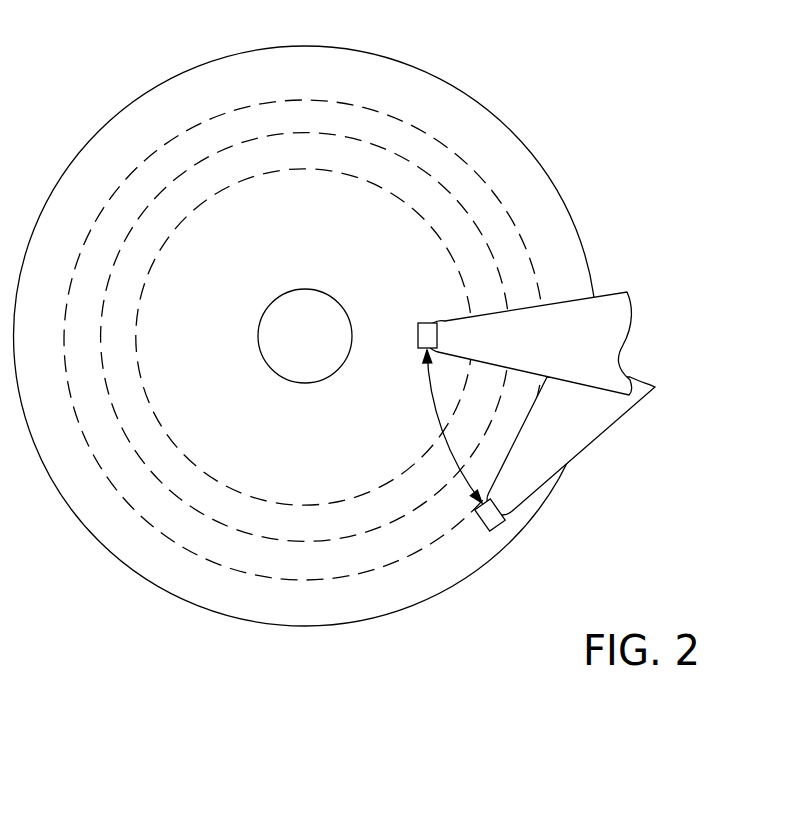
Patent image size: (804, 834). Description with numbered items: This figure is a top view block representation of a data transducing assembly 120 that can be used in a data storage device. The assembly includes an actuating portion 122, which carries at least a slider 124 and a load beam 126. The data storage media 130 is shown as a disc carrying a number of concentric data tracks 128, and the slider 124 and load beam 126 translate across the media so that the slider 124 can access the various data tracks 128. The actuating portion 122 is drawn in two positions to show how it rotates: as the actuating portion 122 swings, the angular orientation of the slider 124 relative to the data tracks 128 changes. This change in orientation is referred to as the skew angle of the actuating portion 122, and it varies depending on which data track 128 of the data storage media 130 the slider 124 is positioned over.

The data transducing assembly 120 is at (550, 88).
The actuating portion 122 is at (613, 425).
The slider 124 is at (503, 522).
The load beam 126 is at (485, 415).
The data tracks 128 is at (150, 207).
The data storage media 130 is at (77, 515).